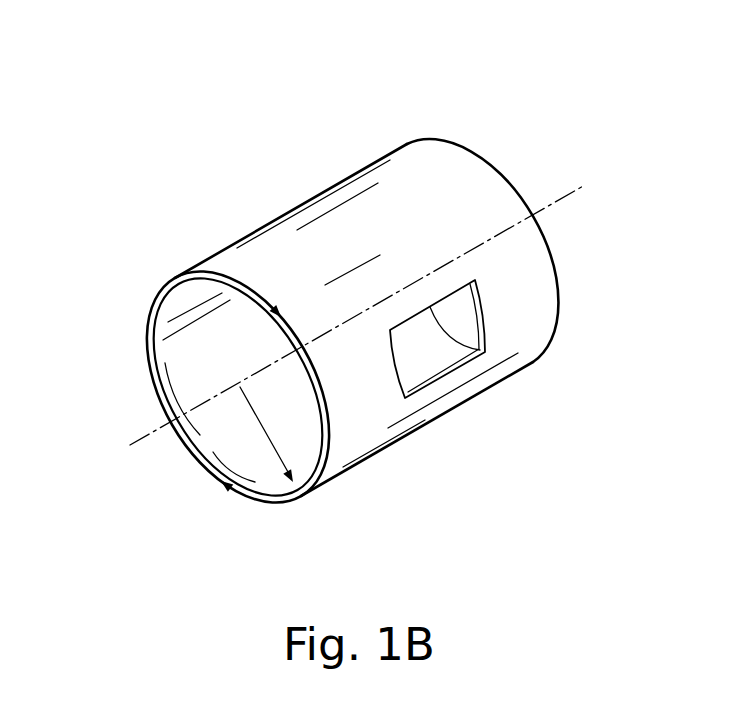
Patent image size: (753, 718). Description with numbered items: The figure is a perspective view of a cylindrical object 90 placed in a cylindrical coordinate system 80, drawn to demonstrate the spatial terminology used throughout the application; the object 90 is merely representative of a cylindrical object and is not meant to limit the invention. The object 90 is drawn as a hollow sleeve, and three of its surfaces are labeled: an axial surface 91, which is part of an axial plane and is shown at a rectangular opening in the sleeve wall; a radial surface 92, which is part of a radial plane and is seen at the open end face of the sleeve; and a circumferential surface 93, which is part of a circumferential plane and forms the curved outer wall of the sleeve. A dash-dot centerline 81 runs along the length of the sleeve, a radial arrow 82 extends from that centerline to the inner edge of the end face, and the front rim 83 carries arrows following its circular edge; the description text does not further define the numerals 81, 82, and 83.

The cylindrical coordinate system 80 is at (530, 155).
The object 90 is at (402, 127).
The circumferential surface 93 is at (273, 247).
The front rim 83 is at (151, 298).
The radial surface 92 is at (270, 498).
The longitudinal axis 81 is at (135, 445).
The radius 82 is at (277, 447).
The axial surface 91 is at (443, 367).